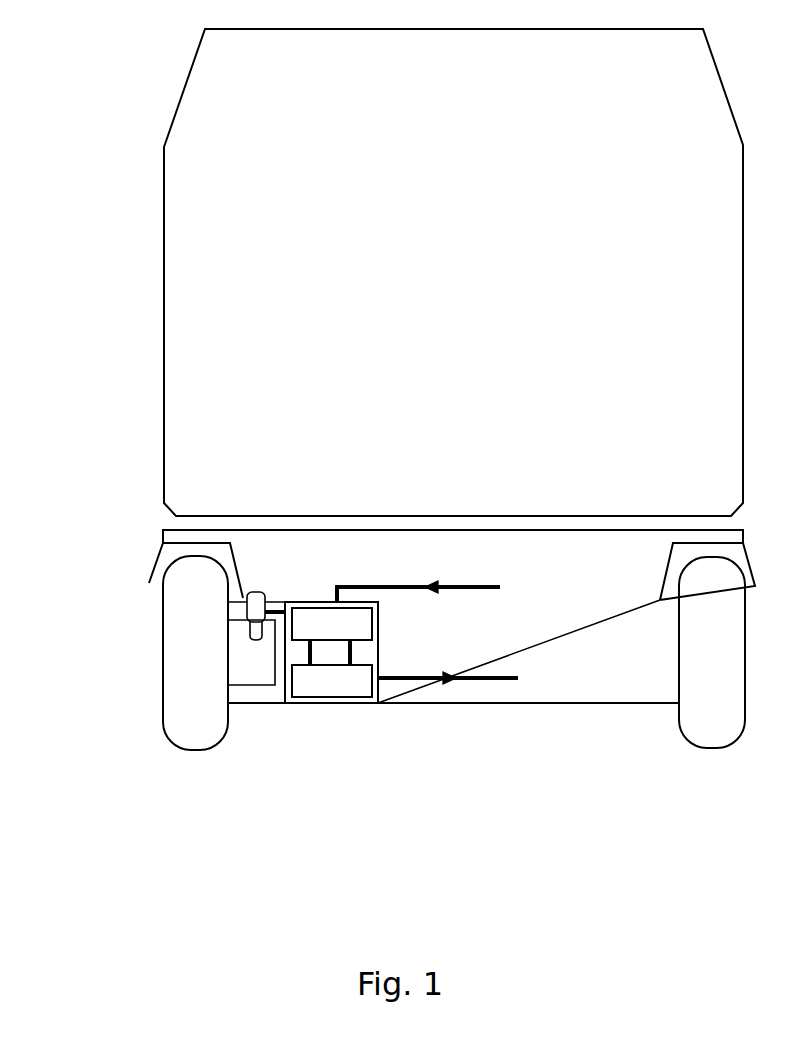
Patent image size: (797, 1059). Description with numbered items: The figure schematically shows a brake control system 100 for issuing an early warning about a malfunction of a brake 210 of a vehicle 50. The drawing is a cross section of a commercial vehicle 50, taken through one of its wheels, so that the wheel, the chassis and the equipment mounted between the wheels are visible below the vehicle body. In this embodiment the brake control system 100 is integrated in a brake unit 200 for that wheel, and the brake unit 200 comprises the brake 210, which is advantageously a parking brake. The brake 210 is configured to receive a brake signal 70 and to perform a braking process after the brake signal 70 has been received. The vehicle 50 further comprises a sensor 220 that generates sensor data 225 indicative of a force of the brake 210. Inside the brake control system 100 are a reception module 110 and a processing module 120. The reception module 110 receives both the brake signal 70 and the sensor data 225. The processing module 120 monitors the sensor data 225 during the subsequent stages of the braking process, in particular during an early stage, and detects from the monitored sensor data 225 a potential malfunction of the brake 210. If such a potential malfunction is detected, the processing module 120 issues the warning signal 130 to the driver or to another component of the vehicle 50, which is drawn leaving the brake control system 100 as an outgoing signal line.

The vehicle 50 is at (145, 80).
The brake signal 70 is at (485, 587).
The sensor data 225 is at (396, 497).
The sensor 220 is at (390, 575).
The brake 210 is at (235, 643).
The brake unit 200 is at (250, 726).
The brake control system 100 is at (308, 703).
The processing module 120 is at (345, 703).
The reception module 110 is at (378, 625).
The warning signal 130 is at (500, 680).